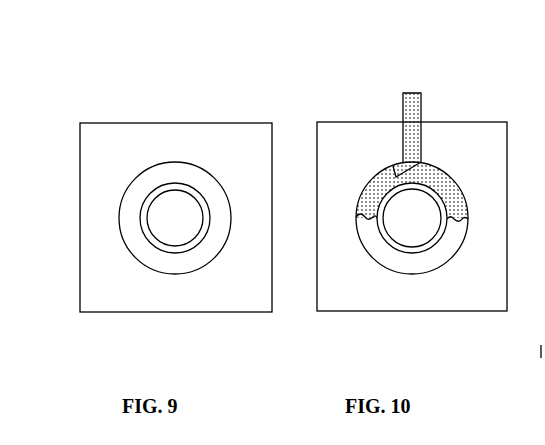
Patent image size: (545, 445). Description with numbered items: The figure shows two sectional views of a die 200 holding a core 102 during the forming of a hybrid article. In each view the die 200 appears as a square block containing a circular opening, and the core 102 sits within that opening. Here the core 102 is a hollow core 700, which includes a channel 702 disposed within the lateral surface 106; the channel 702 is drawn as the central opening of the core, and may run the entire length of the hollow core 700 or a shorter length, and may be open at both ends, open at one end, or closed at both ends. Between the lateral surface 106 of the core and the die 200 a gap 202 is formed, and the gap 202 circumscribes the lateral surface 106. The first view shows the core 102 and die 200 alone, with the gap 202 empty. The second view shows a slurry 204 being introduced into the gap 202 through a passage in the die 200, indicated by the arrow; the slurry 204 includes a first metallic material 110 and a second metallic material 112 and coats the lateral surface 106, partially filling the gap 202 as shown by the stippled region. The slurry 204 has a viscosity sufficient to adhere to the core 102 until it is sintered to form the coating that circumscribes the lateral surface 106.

In FIG. 9, the die 200 is at (110, 123).
In FIG. 10, the die 200 is at (483, 122).
In FIG. 9, the gap 202 is at (196, 258).
In FIG. 10, the gap 202 is at (437, 255).
In FIG. 9, the lateral surface 106 is at (147, 240).
In FIG. 10, the lateral surface 106 is at (385, 243).
In FIG. 9, the core 102 is at (144, 210).
In FIG. 10, the core 102 is at (415, 250).
In FIG. 9, the hollow core 700 is at (182, 187).
In FIG. 10, the hollow core 700 is at (375, 200).
In FIG. 9, the channel 702 is at (175, 220).
In FIG. 10, the channel 702 is at (412, 220).
In FIG. 10, the slurry 204 is at (412, 75).
In FIG. 10, the first metallic material 110 is at (393, 166).
In FIG. 10, the second metallic material 112 is at (397, 176).